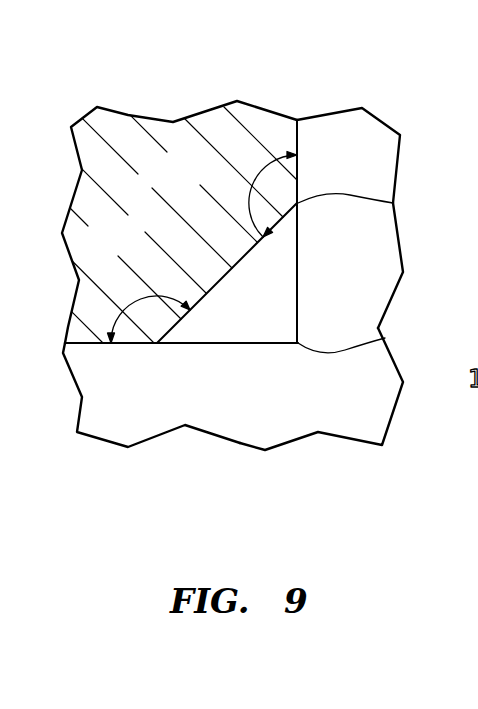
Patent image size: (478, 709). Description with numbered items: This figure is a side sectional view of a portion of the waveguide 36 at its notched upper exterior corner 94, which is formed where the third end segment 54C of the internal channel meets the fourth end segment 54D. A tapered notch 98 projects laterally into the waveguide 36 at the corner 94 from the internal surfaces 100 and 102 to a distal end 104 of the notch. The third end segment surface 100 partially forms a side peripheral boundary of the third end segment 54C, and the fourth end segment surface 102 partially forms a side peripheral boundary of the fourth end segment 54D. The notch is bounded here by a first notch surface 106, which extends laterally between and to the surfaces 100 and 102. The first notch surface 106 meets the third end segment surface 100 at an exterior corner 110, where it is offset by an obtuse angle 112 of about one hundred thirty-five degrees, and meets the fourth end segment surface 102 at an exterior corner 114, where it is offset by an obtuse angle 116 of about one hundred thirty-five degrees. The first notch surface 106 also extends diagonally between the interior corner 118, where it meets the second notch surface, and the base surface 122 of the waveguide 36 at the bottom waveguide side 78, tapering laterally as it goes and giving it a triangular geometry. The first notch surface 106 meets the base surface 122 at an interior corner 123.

The waveguide 36 is at (99, 76).
The third end segment 54C is at (121, 430).
The fourth end segment 54D is at (363, 170).
The bottom side of the waveguide sidewall 78 is at (321, 427).
The upper exterior corner 94 is at (310, 358).
The tapered notch 98 is at (275, 297).
The third end segment surface 100 is at (120, 343).
The fourth end segment surface 102 is at (298, 165).
The distal end of the notch 104 is at (227, 304).
The first notch surface 106 is at (286, 242).
The exterior corner 110 is at (157, 343).
The angle 112 is at (138, 297).
The exterior corner 114 is at (393, 203).
The angle 116 is at (249, 190).
The interior corner 118 is at (208, 291).
The base surface 122 is at (290, 430).
The interior corner 123 is at (385, 338).